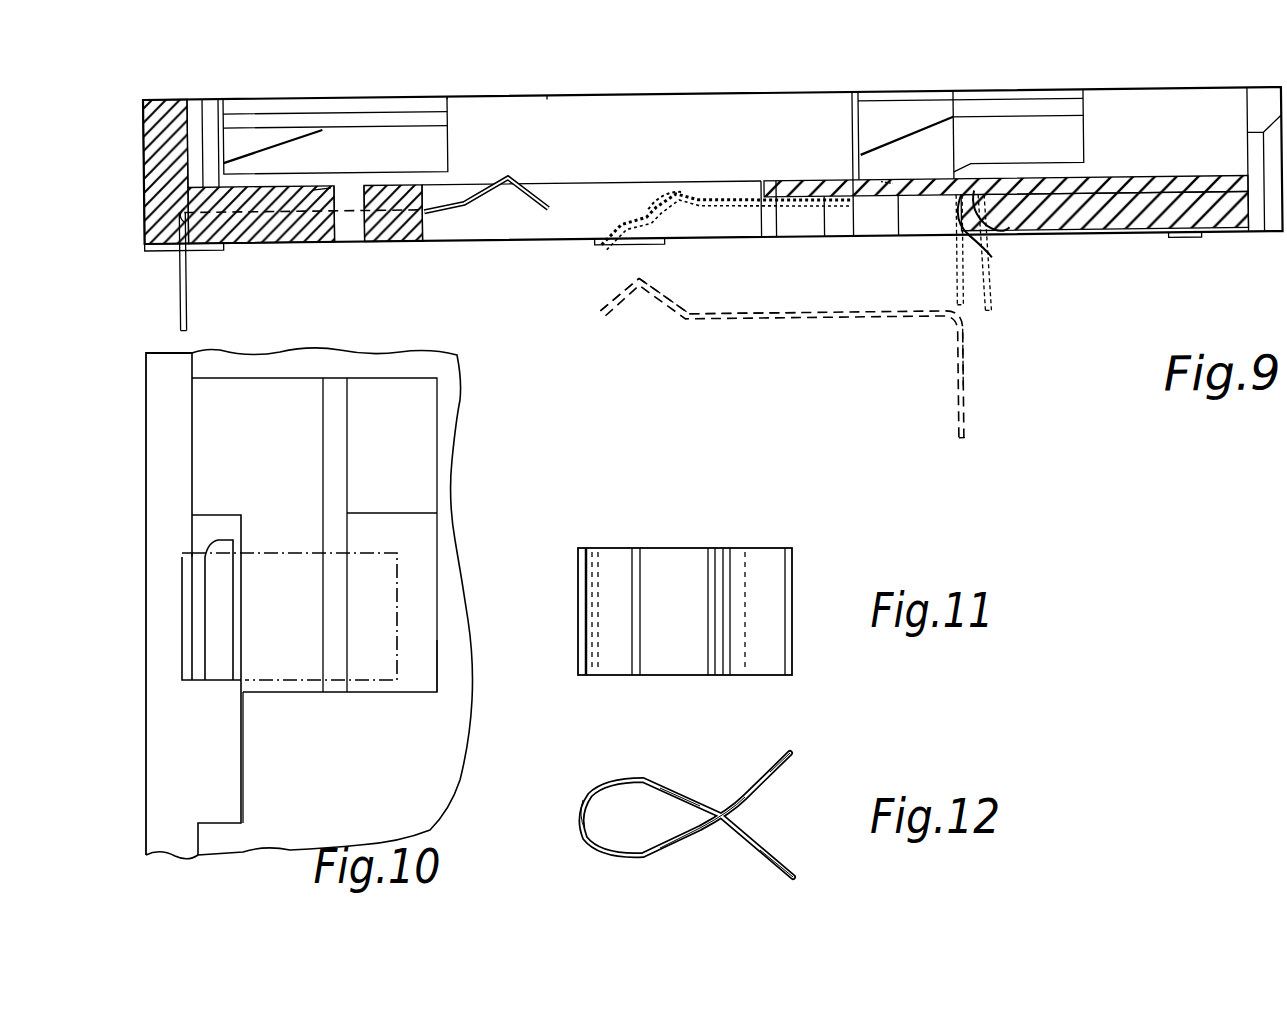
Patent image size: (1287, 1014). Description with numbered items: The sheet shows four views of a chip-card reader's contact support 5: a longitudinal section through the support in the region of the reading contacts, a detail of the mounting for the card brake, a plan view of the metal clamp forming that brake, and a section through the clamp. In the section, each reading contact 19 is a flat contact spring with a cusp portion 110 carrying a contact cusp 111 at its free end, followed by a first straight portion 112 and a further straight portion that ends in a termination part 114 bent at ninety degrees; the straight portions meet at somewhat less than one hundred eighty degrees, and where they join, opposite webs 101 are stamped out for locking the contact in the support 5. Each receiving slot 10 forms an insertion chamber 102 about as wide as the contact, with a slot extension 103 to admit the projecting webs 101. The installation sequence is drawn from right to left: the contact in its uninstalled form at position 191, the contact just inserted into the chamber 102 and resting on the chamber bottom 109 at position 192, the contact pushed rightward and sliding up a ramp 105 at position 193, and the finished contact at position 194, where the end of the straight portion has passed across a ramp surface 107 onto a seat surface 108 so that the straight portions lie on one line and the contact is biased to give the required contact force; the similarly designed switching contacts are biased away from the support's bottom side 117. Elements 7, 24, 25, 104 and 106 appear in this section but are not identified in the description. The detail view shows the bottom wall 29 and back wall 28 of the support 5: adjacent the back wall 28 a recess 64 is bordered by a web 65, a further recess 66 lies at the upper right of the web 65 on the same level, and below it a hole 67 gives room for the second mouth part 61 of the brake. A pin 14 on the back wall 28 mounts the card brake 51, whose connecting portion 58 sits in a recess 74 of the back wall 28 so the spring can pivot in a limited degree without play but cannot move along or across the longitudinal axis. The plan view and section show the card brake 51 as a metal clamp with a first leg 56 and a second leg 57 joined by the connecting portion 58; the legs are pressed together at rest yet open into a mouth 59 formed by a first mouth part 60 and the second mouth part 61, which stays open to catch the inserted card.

In FIG. 9, the contact support 5 is at (1115, 242).
In FIG. 10, the contact support 5 is at (146, 403).
In FIG. 9, the cavity 7 is at (432, 150).
In FIG. 9, the receiving slot 10 is at (588, 186).
In FIG. 10, the pin 14 is at (215, 627).
In FIG. 9, the reading contact 19 is at (455, 216).
In FIG. 9, the guide rail 24 is at (385, 133).
In FIG. 9, the spring tongue 25 is at (275, 150).
In FIG. 10, the back wall 28 is at (158, 458).
In FIG. 10, the bottom wall 29 is at (420, 740).
In FIG. 10, the card brake 51 is at (282, 553).
In FIG. 11, the card brake 51 is at (688, 548).
In FIG. 12, the card brake 51 is at (650, 784).
In FIG. 12, the first leg 56 is at (690, 795).
In FIG. 12, the second leg 57 is at (688, 835).
In FIG. 12, the connecting portion 58 is at (580, 815).
In FIG. 12, the mouth 59 is at (760, 832).
In FIG. 12, the first mouth part 60 is at (772, 765).
In FIG. 12, the second mouth part 61 is at (780, 860).
In FIG. 10, the recess 64 is at (290, 385).
In FIG. 10, the web 65 is at (335, 482).
In FIG. 10, the recess 66 is at (425, 414).
In FIG. 10, the hole 67 is at (435, 652).
In FIG. 10, the recess 74 is at (185, 562).
In FIG. 9, the webs 101 is at (300, 203).
In FIG. 9, the insertion chamber 102 is at (905, 219).
In FIG. 9, the slot extension 103 is at (350, 244).
In FIG. 9, the slot 104 is at (762, 222).
In FIG. 9, the ramp 105 is at (858, 188).
In FIG. 9, the contact point 106 is at (312, 192).
In FIG. 9, the ramp surface 107 is at (990, 267).
In FIG. 9, the seat surface 108 is at (1008, 237).
In FIG. 9, the chamber bottom 109 is at (945, 190).
In FIG. 9, the cusp portion 110 is at (665, 315).
In FIG. 9, the contact cusp 111 is at (637, 278).
In FIG. 9, the first straight portion 112 is at (745, 325).
In FIG. 9, the termination part 114 is at (962, 390).
In FIG. 9, the bottom side 117 is at (1150, 246).
In FIG. 9, the not installed position 191 is at (962, 445).
In FIG. 9, the position after insertion 192 is at (955, 300).
In FIG. 9, the intermediate position 193 is at (988, 314).
In FIG. 9, the installed position 194 is at (184, 307).